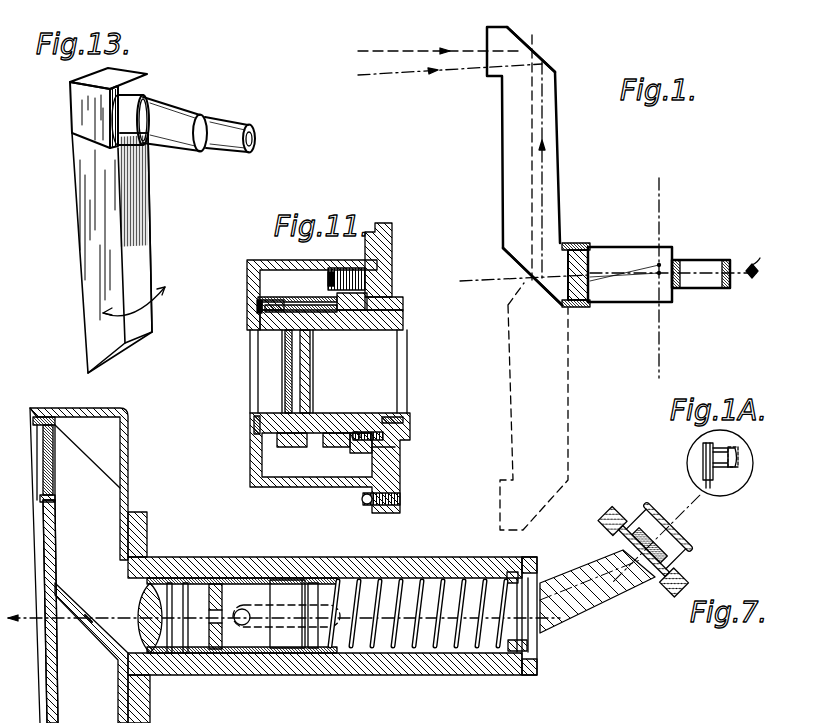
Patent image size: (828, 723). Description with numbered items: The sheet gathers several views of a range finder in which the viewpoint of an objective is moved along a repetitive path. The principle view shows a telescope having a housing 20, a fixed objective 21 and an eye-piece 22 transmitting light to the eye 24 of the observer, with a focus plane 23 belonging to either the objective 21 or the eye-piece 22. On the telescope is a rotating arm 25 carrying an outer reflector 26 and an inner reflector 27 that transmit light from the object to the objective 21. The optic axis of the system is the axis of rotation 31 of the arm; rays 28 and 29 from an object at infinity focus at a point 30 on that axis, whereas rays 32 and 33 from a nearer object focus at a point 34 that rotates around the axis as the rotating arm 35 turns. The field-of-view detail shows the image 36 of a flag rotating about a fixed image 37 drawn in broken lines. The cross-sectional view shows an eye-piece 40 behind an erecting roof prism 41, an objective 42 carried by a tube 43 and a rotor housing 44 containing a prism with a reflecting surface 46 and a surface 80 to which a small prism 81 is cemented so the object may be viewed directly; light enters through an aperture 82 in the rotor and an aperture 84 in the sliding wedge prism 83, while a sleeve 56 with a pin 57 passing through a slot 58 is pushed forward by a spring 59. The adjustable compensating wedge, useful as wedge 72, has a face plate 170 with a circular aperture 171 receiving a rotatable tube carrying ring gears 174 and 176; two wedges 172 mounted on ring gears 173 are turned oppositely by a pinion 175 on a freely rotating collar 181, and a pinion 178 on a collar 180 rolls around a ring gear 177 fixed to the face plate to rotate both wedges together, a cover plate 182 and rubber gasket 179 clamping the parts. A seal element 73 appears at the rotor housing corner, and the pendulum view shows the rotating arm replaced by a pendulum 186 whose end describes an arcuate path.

In FIG. 13, the housing 20 is at (183, 108).
In FIG. 1, the housing 20 is at (630, 303).
In FIG. 1, the fixed objective 21 is at (593, 306).
In FIG. 13, the eye-piece 22 is at (233, 125).
In FIG. 1, the eye-piece 22 is at (701, 260).
In FIG. 1, the focus plane 23 is at (661, 324).
In FIG. 1, the eye 24 is at (755, 262).
In FIG. 1, the rotating arm 25 is at (556, 137).
In FIG. 13, the outer reflector 26 is at (128, 345).
In FIG. 1, the outer reflector 26 is at (527, 44).
In FIG. 1, the inner reflector 27 is at (507, 254).
In FIG. 1, the ray 28 is at (419, 51).
In FIG. 1, the ray 29 is at (531, 146).
In FIG. 1, the point 30 is at (657, 275).
In FIG. 1, the axis of rotation 31 is at (508, 284).
In FIG. 1, the ray 32 is at (415, 74).
In FIG. 1, the ray 33 is at (544, 176).
In FIG. 1, the point 34 is at (658, 264).
In FIG. 13, the rotating arm 35 is at (148, 94).
In FIG. 1, the rotating arm 35 is at (580, 250).
In FIG. 1A, the image 36 is at (703, 463).
In FIG. 1A, the fixed image 37 is at (738, 450).
In FIG. 7, the eye-piece 40 is at (678, 533).
In FIG. 7, the erecting roof prism 41 is at (622, 594).
In FIG. 7, the objective 42 is at (152, 592).
In FIG. 7, the tube 43 is at (474, 670).
In FIG. 7, the rotor housing 44 is at (128, 458).
In FIG. 7, the reflecting surface 46 is at (102, 478).
In FIG. 7, the sleeve 56 is at (272, 632).
In FIG. 7, the pin 57 is at (241, 622).
In FIG. 7, the slot 58 is at (287, 630).
In FIG. 7, the spring 59 is at (416, 602).
In FIG. 7, the wedge 72 is at (43, 450).
In FIG. 7, the top seal 73 is at (36, 418).
In FIG. 7, the reflecting surface 80 is at (75, 605).
In FIG. 7, the small prism 81 is at (86, 625).
In FIG. 7, the aperture 82 is at (46, 624).
In FIG. 7, the prism 83 is at (206, 580).
In FIG. 7, the aperture 84 is at (212, 605).
In FIG. 11, the face plate 170 is at (392, 236).
In FIG. 11, the circular aperture 171 is at (403, 324).
In FIG. 11, the wedges 172 is at (306, 376).
In FIG. 11, the ring gears 173 is at (292, 440).
In FIG. 11, the ring gear 174 is at (334, 440).
In FIG. 11, the pinion 175 is at (292, 297).
In FIG. 11, the ring gear 176 is at (350, 452).
In FIG. 11, the ring gear 177 is at (362, 442).
In FIG. 11, the pinion 178 is at (340, 268).
In FIG. 11, the rubber gasket 179 is at (252, 418).
In FIG. 11, the collar 180 is at (396, 280).
In FIG. 11, the collar 181 is at (322, 425).
In FIG. 11, the cover plate 182 is at (247, 287).
In FIG. 13, the pendulum 186 is at (92, 241).